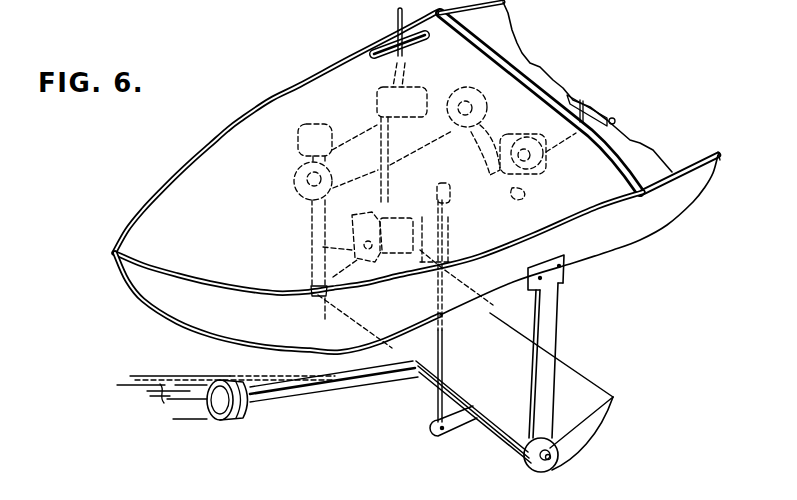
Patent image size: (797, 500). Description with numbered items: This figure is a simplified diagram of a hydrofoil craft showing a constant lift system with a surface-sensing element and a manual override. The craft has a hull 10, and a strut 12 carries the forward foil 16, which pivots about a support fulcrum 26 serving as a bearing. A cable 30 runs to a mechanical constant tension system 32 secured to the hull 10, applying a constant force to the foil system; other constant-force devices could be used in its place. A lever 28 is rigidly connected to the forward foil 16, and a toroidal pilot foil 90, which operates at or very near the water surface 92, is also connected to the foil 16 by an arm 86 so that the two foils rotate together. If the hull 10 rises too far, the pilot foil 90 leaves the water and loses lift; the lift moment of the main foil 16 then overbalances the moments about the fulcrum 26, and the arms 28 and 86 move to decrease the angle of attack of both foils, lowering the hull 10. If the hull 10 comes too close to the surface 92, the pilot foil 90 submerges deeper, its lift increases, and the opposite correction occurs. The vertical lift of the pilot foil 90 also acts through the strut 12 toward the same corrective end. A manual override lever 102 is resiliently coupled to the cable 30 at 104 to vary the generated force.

The hull 10 is at (210, 319).
The strut 12 is at (552, 322).
The forward foil 16 is at (573, 382).
The support fulcrum 26 is at (545, 464).
The lever 28 is at (447, 437).
The cable 30 is at (443, 352).
The mechanical constant tension system 32 is at (334, 116).
The arm 86 is at (337, 386).
The toroidal pilot foil 90 is at (244, 416).
The water surface 92 is at (205, 414).
The lever 102 is at (396, 22).
The resilient coupling 104 is at (447, 214).